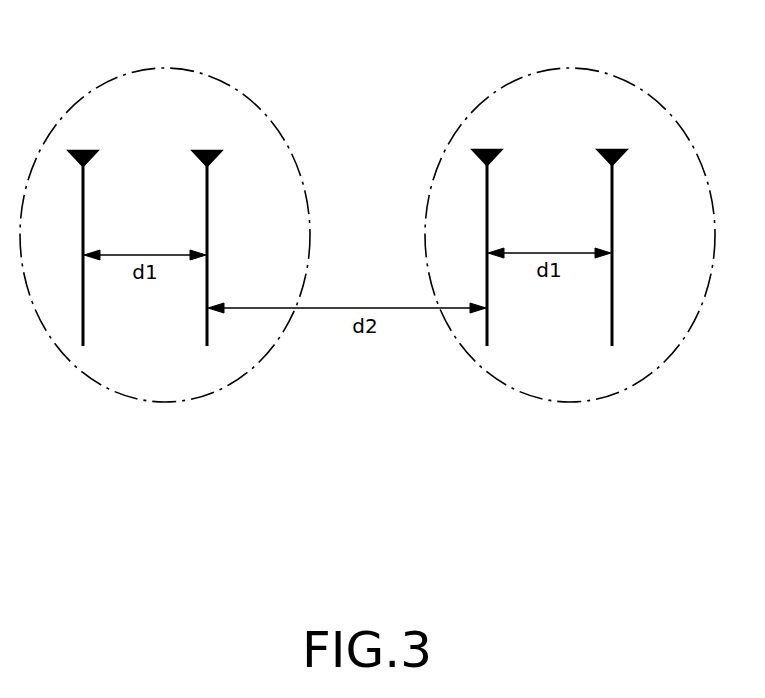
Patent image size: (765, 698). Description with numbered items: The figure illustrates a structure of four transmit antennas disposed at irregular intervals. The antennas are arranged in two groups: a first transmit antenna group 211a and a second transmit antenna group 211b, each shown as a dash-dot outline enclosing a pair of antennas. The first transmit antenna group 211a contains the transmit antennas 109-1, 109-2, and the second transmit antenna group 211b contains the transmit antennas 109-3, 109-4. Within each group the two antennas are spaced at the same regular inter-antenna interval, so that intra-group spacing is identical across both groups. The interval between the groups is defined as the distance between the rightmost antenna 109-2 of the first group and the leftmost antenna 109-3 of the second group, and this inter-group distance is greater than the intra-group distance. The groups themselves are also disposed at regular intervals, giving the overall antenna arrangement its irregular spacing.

The first transmit antenna group 211a is at (165, 68).
The second transmit antenna group 211b is at (568, 68).
The transmit antenna 109-1 is at (85, 197).
The transmit antenna 109-2 is at (209, 197).
The transmit antenna 109-3 is at (489, 196).
The transmit antenna 109-4 is at (614, 196).